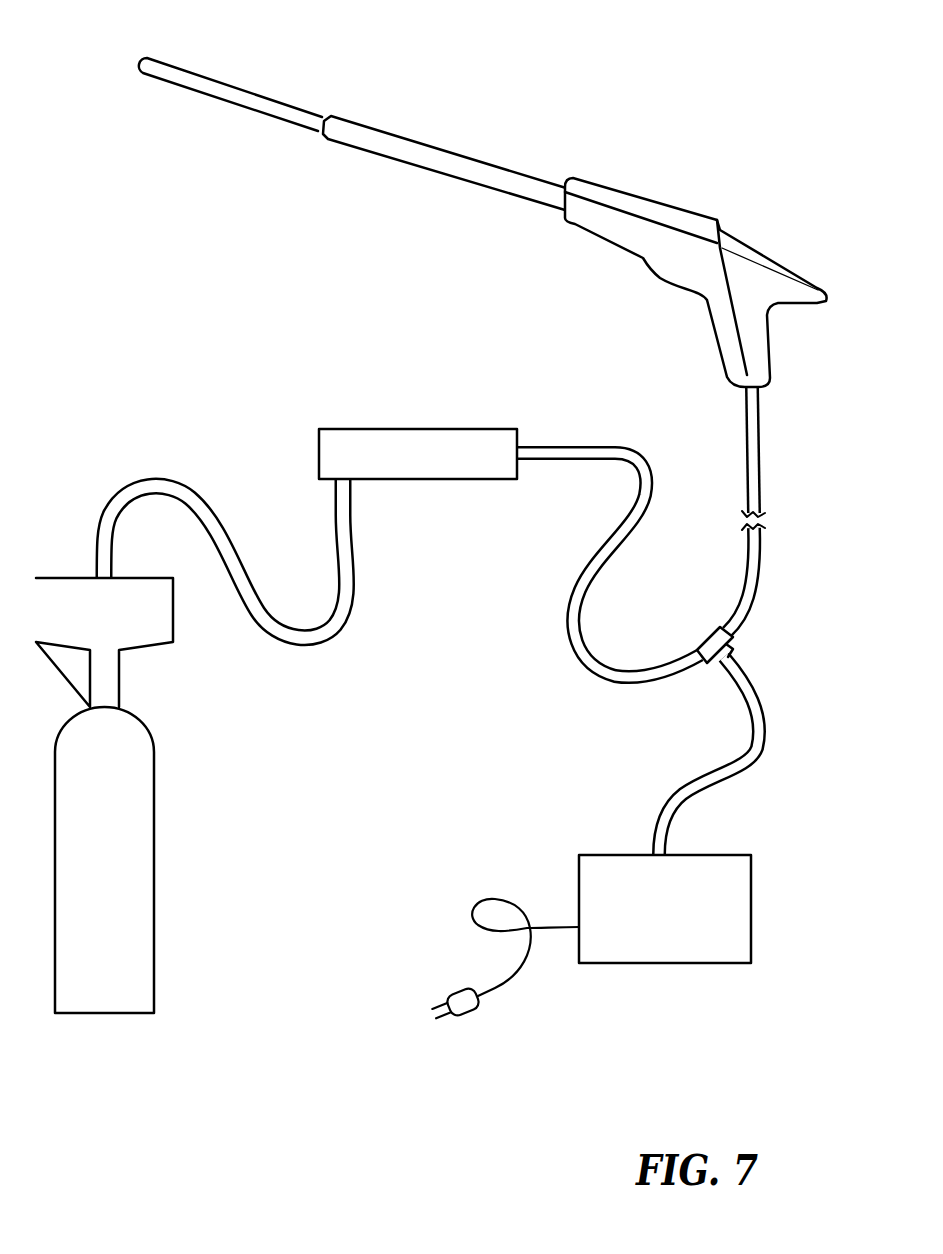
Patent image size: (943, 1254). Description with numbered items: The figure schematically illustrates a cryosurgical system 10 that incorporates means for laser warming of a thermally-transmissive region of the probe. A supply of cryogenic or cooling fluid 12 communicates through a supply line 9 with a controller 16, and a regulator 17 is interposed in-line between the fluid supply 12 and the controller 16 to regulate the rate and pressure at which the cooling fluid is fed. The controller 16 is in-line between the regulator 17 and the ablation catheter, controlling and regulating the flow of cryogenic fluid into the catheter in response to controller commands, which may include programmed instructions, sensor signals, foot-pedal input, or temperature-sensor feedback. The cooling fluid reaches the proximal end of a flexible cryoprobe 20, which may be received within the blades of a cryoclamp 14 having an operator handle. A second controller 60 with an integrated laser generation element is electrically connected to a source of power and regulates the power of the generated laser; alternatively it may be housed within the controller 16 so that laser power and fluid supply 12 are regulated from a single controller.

The supply line 9 is at (128, 487).
The cryosurgical system 10 is at (418, 410).
The cryogenic fluid supply 12 is at (154, 893).
The cryoclamp 14 is at (568, 133).
The controller 16 is at (351, 429).
The regulator 17 is at (104, 642).
The cryoprobe 20 is at (245, 88).
The second controller 60 is at (590, 939).